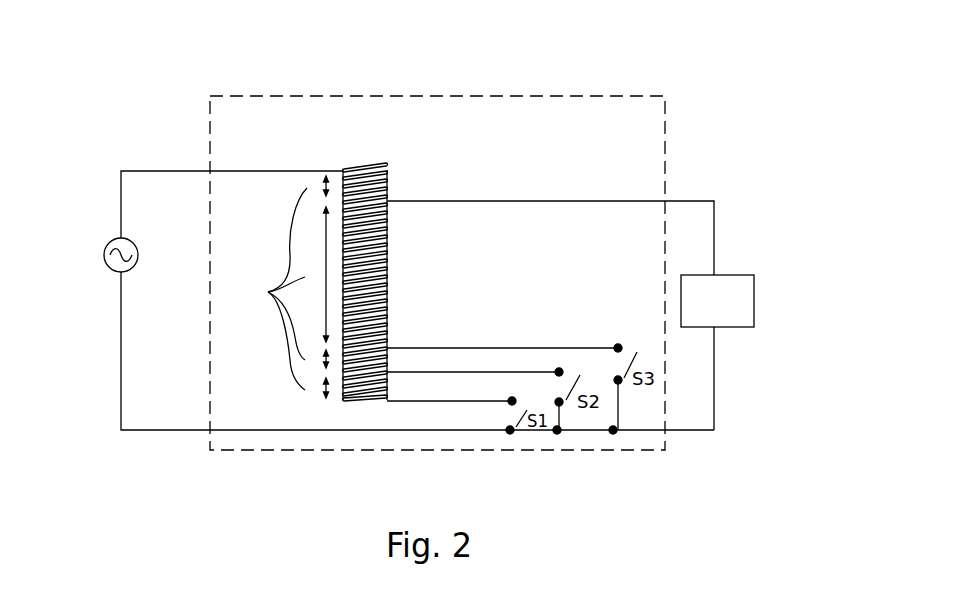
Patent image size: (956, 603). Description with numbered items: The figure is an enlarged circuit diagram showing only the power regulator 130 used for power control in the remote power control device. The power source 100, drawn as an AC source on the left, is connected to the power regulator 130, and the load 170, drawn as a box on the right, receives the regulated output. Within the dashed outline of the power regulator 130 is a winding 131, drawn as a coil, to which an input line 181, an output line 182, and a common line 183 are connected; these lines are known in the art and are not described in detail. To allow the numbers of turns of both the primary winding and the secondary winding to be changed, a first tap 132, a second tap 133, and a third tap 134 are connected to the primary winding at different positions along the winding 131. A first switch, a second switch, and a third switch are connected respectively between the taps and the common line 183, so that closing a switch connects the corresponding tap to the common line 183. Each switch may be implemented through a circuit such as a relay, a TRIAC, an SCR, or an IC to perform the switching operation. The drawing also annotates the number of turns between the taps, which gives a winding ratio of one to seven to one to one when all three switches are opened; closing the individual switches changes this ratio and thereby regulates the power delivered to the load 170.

The power regulator 130 is at (97, 32).
The power source 100 is at (104, 258).
The input line 181 is at (118, 190).
The output line 182 is at (714, 218).
The common line 183 is at (165, 432).
The load 170 is at (754, 305).
The winding 131 is at (389, 274).
The first tap 132 is at (391, 401).
The second tap 133 is at (391, 372).
The third tap 134 is at (391, 348).